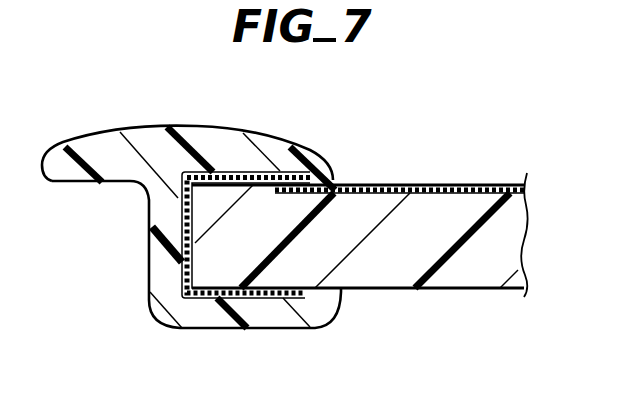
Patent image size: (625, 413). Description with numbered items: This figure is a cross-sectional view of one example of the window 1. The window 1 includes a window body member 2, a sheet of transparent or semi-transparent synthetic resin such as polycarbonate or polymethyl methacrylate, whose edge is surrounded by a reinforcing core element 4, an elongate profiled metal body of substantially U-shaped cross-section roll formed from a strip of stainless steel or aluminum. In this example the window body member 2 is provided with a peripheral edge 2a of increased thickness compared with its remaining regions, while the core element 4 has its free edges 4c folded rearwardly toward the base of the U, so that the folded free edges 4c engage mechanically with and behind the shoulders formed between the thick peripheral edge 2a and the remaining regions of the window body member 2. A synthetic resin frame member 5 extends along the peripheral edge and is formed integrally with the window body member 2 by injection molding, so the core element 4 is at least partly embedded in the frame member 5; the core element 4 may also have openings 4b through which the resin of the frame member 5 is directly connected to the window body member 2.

The window 1 is at (420, 162).
The window body member 2 is at (508, 238).
The peripheral edge 2a is at (223, 207).
The reinforcing core element 4 is at (180, 270).
The openings 4b is at (177, 233).
The folded free edges 4c is at (320, 177).
The frame member 5 is at (127, 138).